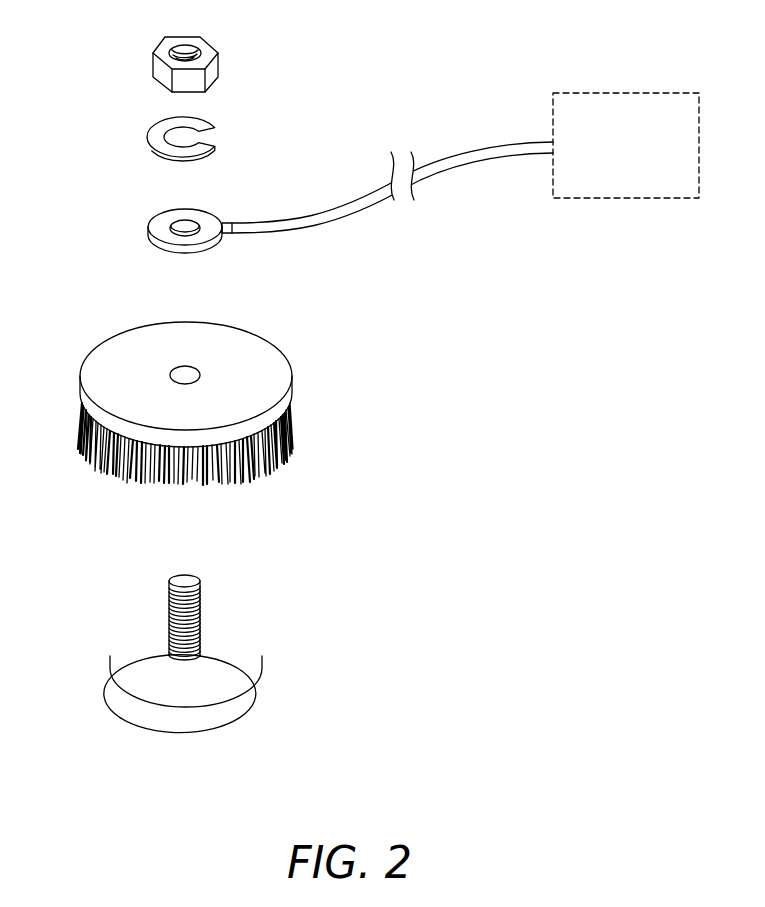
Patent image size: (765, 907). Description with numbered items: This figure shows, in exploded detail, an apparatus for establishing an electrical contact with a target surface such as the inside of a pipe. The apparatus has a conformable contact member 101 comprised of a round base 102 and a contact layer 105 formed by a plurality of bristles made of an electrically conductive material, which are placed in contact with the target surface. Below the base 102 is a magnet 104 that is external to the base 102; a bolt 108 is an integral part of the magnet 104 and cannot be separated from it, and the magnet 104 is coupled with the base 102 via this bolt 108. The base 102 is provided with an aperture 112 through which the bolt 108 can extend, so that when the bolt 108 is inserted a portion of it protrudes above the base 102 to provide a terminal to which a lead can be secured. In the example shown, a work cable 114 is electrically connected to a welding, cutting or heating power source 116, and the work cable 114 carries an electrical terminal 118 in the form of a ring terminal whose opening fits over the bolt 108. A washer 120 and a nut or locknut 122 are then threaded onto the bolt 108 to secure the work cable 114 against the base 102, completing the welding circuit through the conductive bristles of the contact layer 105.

The conformable contact member 101 is at (324, 392).
The base 102 is at (265, 347).
The magnet 104 is at (254, 655).
The contact layer 105 is at (84, 423).
The bolt 108 is at (202, 604).
The aperture 112 is at (171, 375).
The work cable 114 is at (457, 150).
The welding, cutting or heating power source 116 is at (622, 92).
The electrical terminal 118 is at (162, 252).
The washer 120 is at (222, 140).
The nut 122 is at (214, 46).